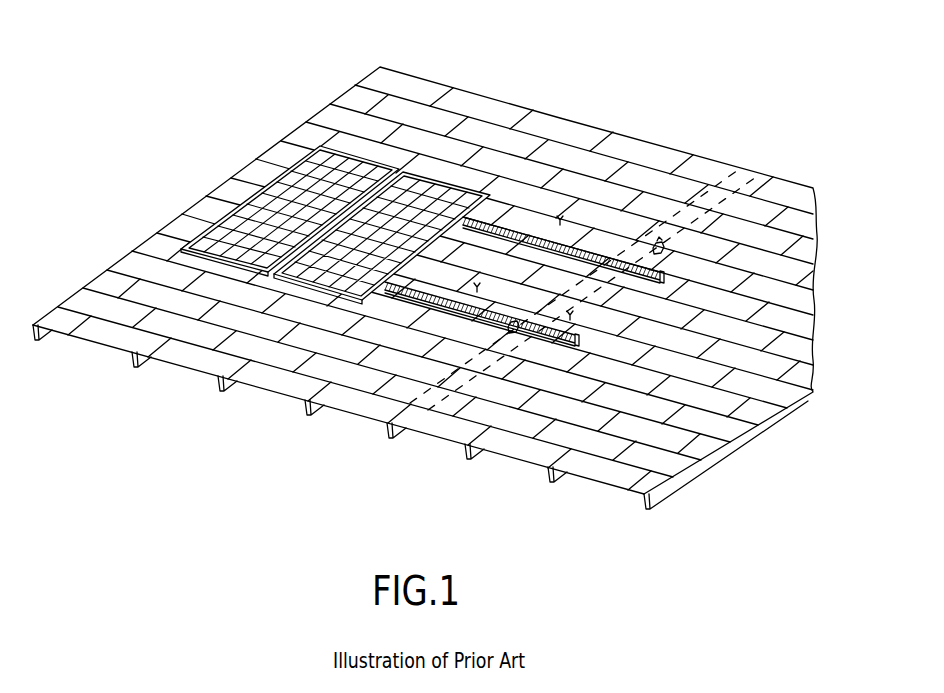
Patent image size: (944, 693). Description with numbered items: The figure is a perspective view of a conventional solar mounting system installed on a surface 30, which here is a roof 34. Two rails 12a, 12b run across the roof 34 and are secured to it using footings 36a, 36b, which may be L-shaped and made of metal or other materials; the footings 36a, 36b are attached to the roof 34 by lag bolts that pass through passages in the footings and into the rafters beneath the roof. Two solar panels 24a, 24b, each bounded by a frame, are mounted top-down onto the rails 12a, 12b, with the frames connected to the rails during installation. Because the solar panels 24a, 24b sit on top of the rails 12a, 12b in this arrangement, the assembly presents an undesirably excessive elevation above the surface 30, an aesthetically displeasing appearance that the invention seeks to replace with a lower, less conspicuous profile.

The surface 30 is at (380, 94).
The roof 34 is at (112, 268).
The solar panel 24a is at (342, 153).
The solar panel 24b is at (440, 182).
The rail 12a is at (527, 227).
The rail 12b is at (437, 298).
The footing 36a is at (513, 330).
The footing 36b is at (594, 212).